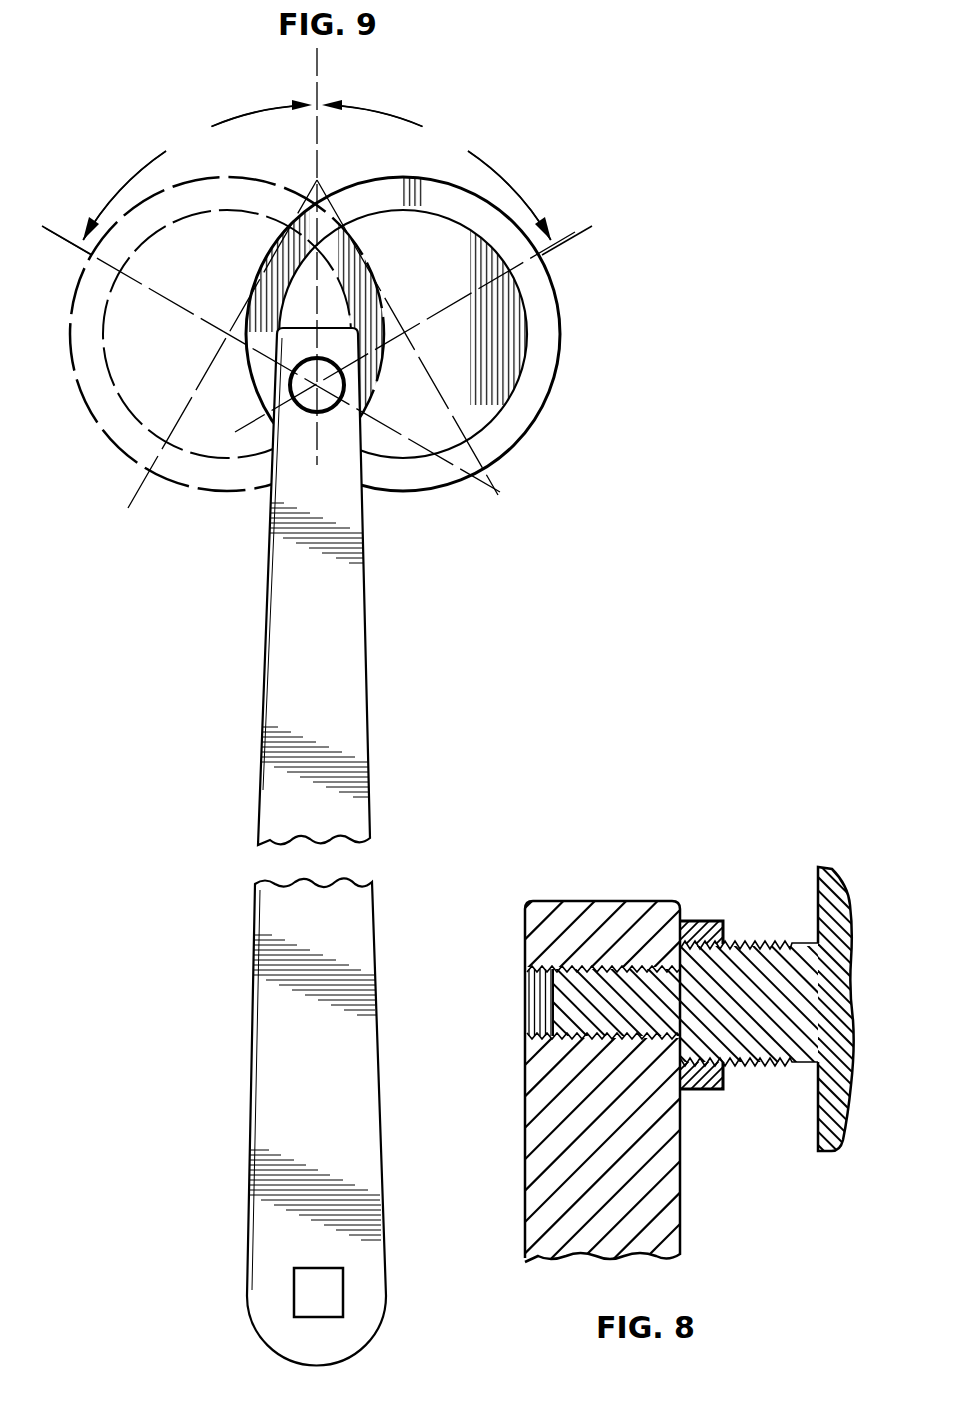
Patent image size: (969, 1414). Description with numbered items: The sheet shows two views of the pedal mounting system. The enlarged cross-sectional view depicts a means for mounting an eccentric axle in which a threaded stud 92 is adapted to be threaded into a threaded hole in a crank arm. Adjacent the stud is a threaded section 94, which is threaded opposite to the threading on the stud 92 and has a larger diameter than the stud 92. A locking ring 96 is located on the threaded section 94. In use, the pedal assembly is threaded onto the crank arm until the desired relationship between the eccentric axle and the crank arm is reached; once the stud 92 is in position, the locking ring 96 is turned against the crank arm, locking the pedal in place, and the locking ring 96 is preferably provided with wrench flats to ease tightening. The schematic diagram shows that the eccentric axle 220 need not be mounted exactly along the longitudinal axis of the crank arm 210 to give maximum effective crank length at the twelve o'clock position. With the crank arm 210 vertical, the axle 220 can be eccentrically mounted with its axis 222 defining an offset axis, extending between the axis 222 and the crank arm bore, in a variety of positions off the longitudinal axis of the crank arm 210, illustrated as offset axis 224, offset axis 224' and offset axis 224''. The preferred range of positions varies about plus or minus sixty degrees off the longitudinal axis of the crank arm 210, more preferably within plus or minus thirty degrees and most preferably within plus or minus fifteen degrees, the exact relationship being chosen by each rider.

In FIG. 9, the crank arm 210 is at (362, 601).
In FIG. 8, the crank arm 210 is at (572, 905).
In FIG. 9, the eccentric axle 220 is at (528, 304).
In FIG. 9, the axis 222 is at (405, 336).
In FIG. 9, the offset axis 224 is at (317, 151).
In FIG. 9, the offset axis 224' is at (67, 212).
In FIG. 9, the offset axis 224'' is at (579, 212).
In FIG. 8, the threaded stud 92 is at (565, 1002).
In FIG. 8, the threaded section 94 is at (772, 958).
In FIG. 8, the locking ring 96 is at (714, 921).